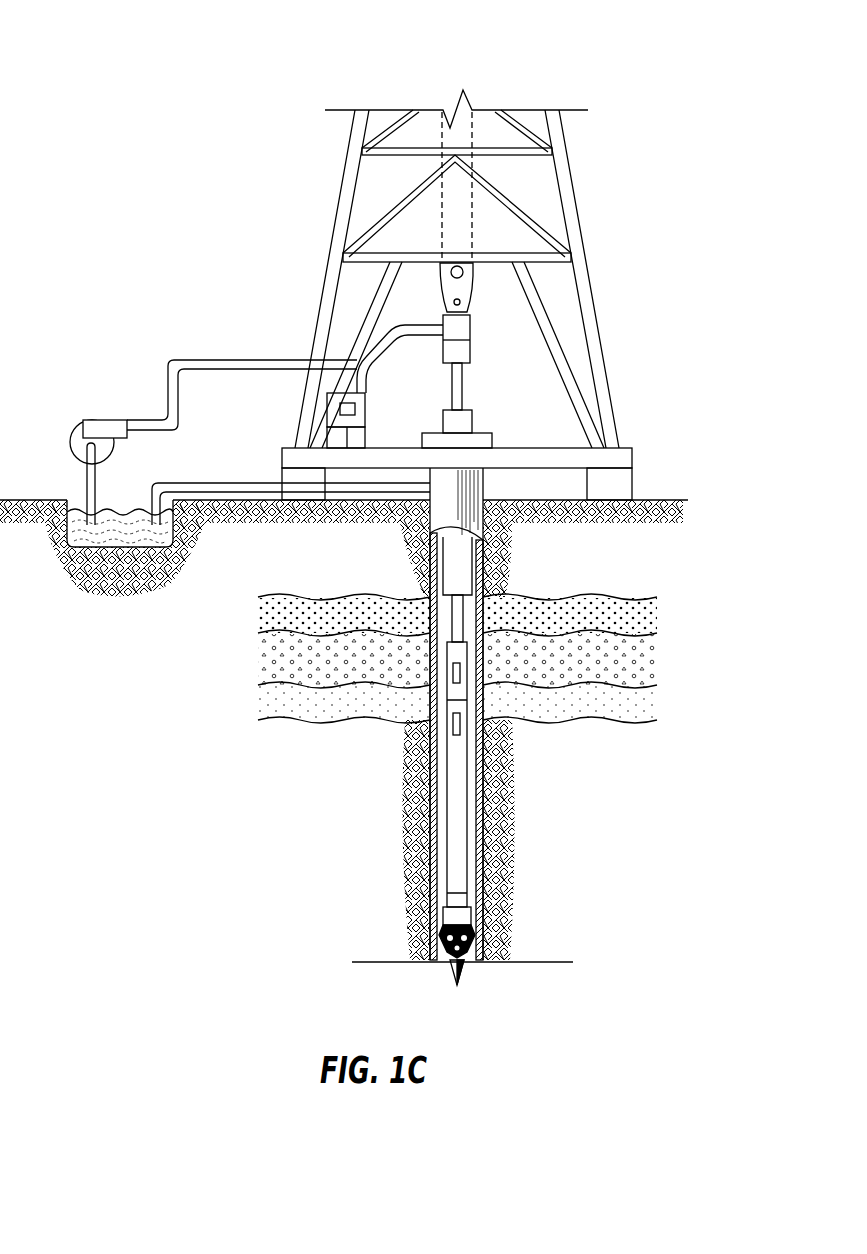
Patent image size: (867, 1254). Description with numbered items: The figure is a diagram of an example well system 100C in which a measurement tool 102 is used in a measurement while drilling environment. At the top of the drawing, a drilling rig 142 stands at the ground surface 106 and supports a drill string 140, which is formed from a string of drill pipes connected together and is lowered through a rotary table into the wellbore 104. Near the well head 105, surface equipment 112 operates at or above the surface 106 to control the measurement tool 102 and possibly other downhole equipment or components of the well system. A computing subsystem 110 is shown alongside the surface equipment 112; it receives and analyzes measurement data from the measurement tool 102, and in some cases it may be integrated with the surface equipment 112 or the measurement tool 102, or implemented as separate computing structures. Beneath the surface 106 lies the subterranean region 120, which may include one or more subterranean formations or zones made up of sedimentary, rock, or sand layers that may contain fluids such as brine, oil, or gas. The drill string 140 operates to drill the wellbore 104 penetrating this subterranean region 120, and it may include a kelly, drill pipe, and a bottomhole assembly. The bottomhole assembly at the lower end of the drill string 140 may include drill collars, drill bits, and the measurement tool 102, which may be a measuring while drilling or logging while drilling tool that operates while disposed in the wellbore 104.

The well system 100C is at (160, 71).
The drilling rig 142 is at (229, 248).
The surface equipment 112 is at (643, 348).
The computing subsystem 110 is at (360, 393).
The well head 105 is at (485, 433).
The ground surface 106 is at (660, 500).
The subterranean region 120 is at (556, 596).
The drill string 140 is at (449, 612).
The wellbore 104 is at (432, 793).
The measurement tool 102 is at (447, 838).